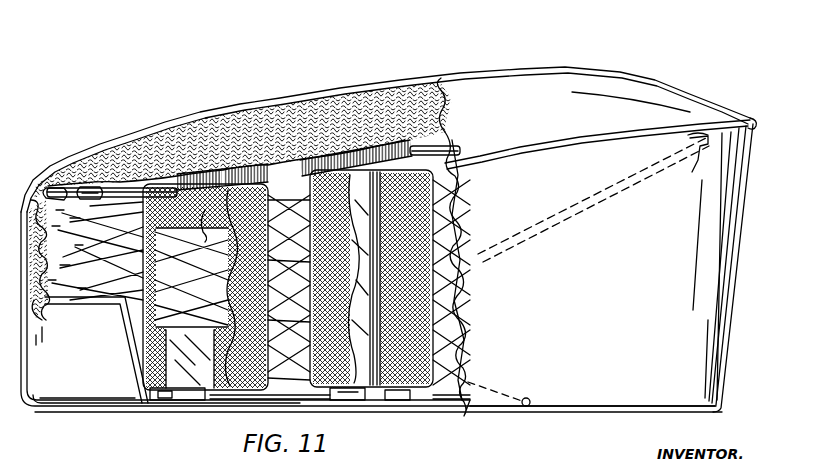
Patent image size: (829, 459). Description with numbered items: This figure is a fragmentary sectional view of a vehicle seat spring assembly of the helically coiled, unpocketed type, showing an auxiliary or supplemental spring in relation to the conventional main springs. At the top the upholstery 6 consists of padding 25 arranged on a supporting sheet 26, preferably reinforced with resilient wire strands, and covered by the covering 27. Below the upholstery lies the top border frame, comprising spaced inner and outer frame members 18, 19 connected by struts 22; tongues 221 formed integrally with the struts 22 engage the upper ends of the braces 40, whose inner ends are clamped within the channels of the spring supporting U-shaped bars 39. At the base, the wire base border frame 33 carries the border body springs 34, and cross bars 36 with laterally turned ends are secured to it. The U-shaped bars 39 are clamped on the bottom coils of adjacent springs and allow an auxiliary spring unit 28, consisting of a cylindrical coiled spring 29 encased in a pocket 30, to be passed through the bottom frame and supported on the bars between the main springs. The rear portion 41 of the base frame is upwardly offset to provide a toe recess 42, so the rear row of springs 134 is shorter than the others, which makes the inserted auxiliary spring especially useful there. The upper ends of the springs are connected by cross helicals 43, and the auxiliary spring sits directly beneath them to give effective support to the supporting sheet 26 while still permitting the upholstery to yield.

The upholstery 6 is at (548, 75).
The inner frame member 18 is at (93, 190).
The outer frame member 19 is at (53, 187).
The strut 22 is at (72, 191).
The padding 25 is at (385, 92).
The supporting sheet 26 is at (447, 138).
The covering 27 is at (335, 92).
The auxiliary spring unit 28 is at (450, 220).
The cylindrical coiled spring 29 is at (148, 300).
The pocket 30 is at (147, 313).
The wire base border frame 33 is at (97, 300).
The border body spring 34 is at (277, 394).
The cross bar 36 is at (407, 406).
The spring supporting U-shaped bar 39 is at (176, 396).
The brace 40 is at (547, 232).
The rear portion of the base frame 41 is at (95, 325).
The toe recess 42 is at (72, 398).
The cross helical 43 is at (196, 186).
The rear row of springs 134 is at (107, 245).
The tongue 221 is at (700, 160).